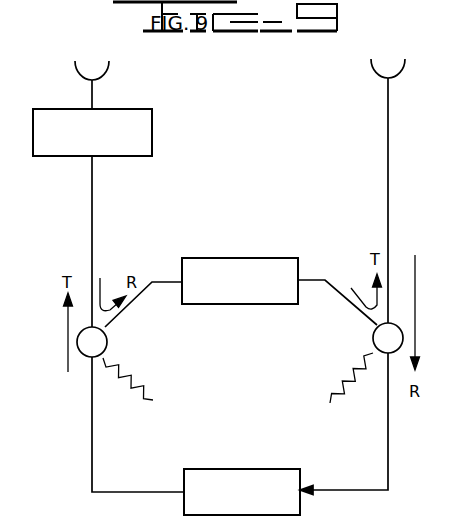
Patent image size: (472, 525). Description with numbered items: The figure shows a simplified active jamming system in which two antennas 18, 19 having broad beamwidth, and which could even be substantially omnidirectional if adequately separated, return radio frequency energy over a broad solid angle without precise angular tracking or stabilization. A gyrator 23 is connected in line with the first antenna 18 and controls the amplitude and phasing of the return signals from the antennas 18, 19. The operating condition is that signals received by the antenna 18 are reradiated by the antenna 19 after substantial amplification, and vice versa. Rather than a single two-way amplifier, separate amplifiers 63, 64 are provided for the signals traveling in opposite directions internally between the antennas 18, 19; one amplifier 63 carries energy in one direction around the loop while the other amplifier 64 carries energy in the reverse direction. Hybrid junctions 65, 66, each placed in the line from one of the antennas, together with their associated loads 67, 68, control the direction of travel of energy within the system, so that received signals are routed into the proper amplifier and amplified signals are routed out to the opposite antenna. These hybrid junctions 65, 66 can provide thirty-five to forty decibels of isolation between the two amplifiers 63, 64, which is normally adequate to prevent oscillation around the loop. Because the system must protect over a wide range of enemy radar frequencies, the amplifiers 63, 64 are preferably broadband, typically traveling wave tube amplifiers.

The antenna 18 is at (106, 78).
The antenna 19 is at (372, 78).
The gyrator 23 is at (68, 109).
The amplifier 63 is at (221, 258).
The amplifier 64 is at (222, 469).
The hybrid junction 65 is at (107, 340).
The hybrid junction 66 is at (373, 339).
The load 67 is at (152, 393).
The load 68 is at (333, 385).